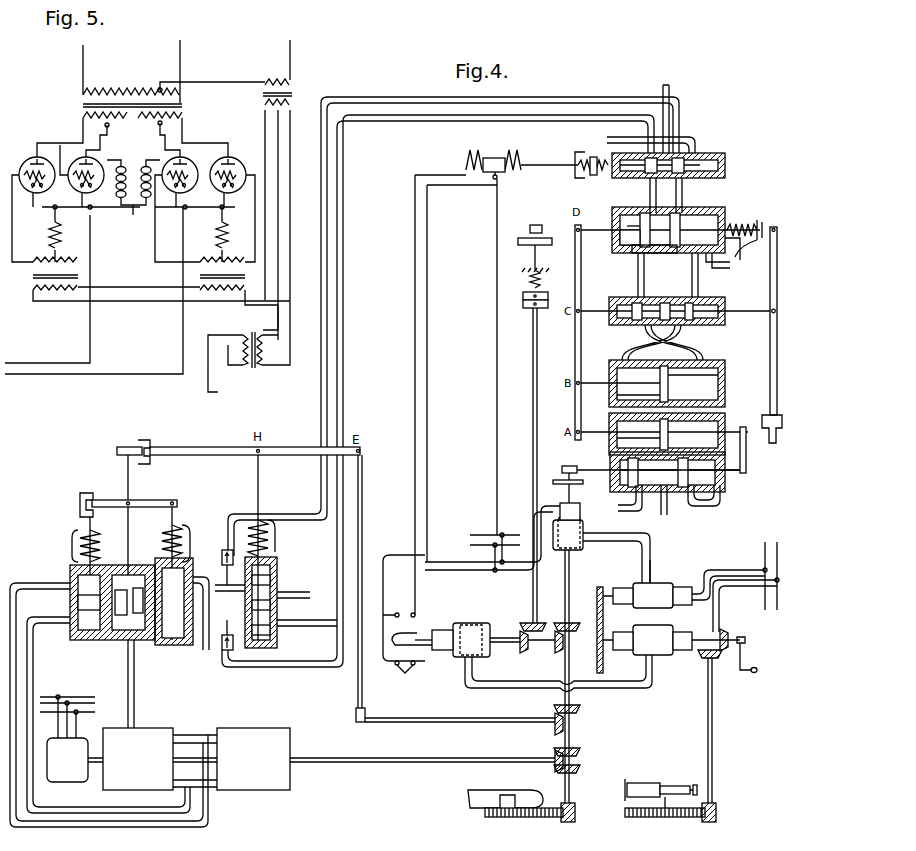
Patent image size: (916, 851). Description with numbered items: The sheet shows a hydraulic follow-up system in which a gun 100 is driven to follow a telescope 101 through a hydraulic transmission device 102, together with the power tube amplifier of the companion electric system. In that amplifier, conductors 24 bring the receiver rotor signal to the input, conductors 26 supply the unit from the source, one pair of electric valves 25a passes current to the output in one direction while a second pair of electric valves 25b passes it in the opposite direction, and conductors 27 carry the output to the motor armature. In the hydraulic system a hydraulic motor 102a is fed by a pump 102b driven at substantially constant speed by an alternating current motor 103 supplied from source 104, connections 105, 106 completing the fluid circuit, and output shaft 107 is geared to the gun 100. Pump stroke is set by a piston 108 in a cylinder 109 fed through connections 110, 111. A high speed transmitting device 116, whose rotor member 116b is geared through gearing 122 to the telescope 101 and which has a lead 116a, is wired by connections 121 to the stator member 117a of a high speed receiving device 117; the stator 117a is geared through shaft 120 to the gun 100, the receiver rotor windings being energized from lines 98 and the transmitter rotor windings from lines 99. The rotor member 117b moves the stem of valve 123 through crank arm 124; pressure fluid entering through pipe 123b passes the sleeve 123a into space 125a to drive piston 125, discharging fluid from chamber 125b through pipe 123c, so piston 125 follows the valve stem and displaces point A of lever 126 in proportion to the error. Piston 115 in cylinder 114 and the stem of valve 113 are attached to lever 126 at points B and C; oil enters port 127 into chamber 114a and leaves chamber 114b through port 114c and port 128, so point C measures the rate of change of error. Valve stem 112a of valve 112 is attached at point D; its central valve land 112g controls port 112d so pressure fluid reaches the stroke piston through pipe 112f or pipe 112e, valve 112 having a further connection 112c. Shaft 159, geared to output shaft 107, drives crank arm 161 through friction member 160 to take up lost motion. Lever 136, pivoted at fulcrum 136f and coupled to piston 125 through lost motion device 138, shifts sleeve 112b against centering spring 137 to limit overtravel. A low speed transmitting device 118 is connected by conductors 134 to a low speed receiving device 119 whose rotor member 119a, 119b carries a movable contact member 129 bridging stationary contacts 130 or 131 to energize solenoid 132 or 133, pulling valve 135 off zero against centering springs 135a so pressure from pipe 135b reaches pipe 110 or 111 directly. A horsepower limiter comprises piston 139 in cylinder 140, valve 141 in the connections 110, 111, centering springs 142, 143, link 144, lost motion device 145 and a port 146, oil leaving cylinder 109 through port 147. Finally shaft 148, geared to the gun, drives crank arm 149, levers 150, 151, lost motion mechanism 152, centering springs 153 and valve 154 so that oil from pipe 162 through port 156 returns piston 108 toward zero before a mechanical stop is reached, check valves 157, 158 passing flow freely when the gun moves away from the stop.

In FIG. 5, the conductors 24 is at (215, 392).
In FIG. 5, the electric valves 25a is at (78, 157).
In FIG. 5, the electric valves 25b is at (225, 157).
In FIG. 5, the conductors 26 is at (180, 60).
In FIG. 5, the conductors 27 is at (43, 374).
In FIG. 4, the lines 98 is at (510, 545).
In FIG. 4, the lines 99 is at (763, 550).
In FIG. 4, the gun 100 is at (475, 798).
In FIG. 4, the telescope 101 is at (655, 768).
In FIG. 4, the hydraulic transmission device 102 is at (195, 732).
In FIG. 4, the hydraulic motor 102a is at (253, 759).
In FIG. 4, the pump 102b is at (138, 759).
In FIG. 4, the alternating current motor 103 is at (75, 760).
In FIG. 4, the source 104 is at (95, 697).
In FIG. 4, the connection 105 is at (188, 739).
In FIG. 4, the connection 106 is at (188, 787).
In FIG. 4, the output shaft 107 is at (360, 764).
In FIG. 4, the piston 108 is at (140, 588).
In FIG. 4, the cylinder 109 is at (120, 590).
In FIG. 4, the connection 110 is at (321, 272).
In FIG. 4, the connection 111 is at (338, 272).
In FIG. 4, the valve 112 is at (722, 207).
In FIG. 4, the valve stem 112a is at (622, 235).
In FIG. 4, the sleeve 112b is at (735, 222).
In FIG. 4, the port 112c is at (731, 276).
In FIG. 4, the port 112d is at (663, 250).
In FIG. 4, the pipe 112e is at (680, 200).
In FIG. 4, the pipe 112f is at (645, 200).
In FIG. 4, the central valve land 112g is at (650, 232).
In FIG. 4, the valve 113 is at (704, 325).
In FIG. 4, the cylinder 114 is at (726, 375).
In FIG. 4, the chamber 114a is at (710, 388).
In FIG. 4, the chamber 114b is at (625, 401).
In FIG. 4, the port 114c is at (645, 348).
In FIG. 4, the piston 115 is at (664, 368).
In FIG. 4, the high speed transmitting device 116 is at (662, 595).
In FIG. 4, the lead 116a is at (668, 583).
In FIG. 4, the rotor member 116b is at (622, 590).
In FIG. 4, the high speed receiving device 117 is at (568, 534).
In FIG. 4, the stator member 117a is at (585, 550).
In FIG. 4, the rotor member 117b is at (560, 510).
In FIG. 4, the low speed transmitting device 118 is at (685, 714).
In FIG. 4, the low speed receiving device 119 is at (471, 640).
In FIG. 4, the rotor member 119a is at (483, 657).
In FIG. 4, the rotor member 119b is at (441, 652).
In FIG. 4, the shaft 120 is at (525, 613).
In FIG. 4, the connections 121 is at (652, 553).
In FIG. 4, the gearing 122 is at (604, 605).
In FIG. 4, the valve 123 is at (726, 490).
In FIG. 4, the sleeve 123a is at (710, 502).
In FIG. 4, the pipe 123b is at (666, 523).
In FIG. 4, the pipe 123c is at (616, 511).
In FIG. 4, the crank arm 124 is at (565, 478).
In FIG. 4, the piston 125 is at (660, 436).
In FIG. 4, the space 125a is at (625, 430).
In FIG. 4, the chamber 125b is at (738, 432).
In FIG. 4, the lever 126 is at (578, 405).
In FIG. 4, the port 127 is at (638, 290).
In FIG. 4, the port 128 is at (700, 293).
In FIG. 4, the movable contact member 129 is at (433, 628).
In FIG. 4, the stationary contacts 130 is at (405, 670).
In FIG. 4, the stationary contacts 131 is at (404, 614).
In FIG. 4, the solenoid 132 is at (515, 160).
In FIG. 4, the solenoid 133 is at (478, 160).
In FIG. 4, the conductors 134 is at (528, 690).
In FIG. 4, the valve 135 is at (726, 162).
In FIG. 4, the centering springs 135a is at (605, 140).
In FIG. 4, the pipe 135b is at (672, 92).
In FIG. 4, the lever 136 is at (770, 352).
In FIG. 4, the fulcrum 136f is at (770, 313).
In FIG. 4, the centering spring 137 is at (745, 258).
In FIG. 4, the lost motion device 138 is at (776, 443).
In FIG. 4, the piston 139 is at (78, 603).
In FIG. 4, the cylinder 140 is at (78, 630).
In FIG. 4, the valve 141 is at (170, 648).
In FIG. 4, the centering spring 142 is at (78, 541).
In FIG. 4, the centering spring 143 is at (185, 538).
In FIG. 4, the link 144 is at (152, 500).
In FIG. 4, the lost motion device 145 is at (90, 493).
In FIG. 4, the conduit 146 is at (216, 595).
In FIG. 4, the port 147 is at (208, 657).
In FIG. 4, the shaft 148 is at (462, 724).
In FIG. 4, the crank arm 149 is at (368, 714).
In FIG. 4, the lever 150 is at (362, 512).
In FIG. 4, the lever 151 is at (203, 447).
In FIG. 4, the lost motion mechanism 152 is at (130, 447).
In FIG. 4, the centering springs 153 is at (268, 535).
In FIG. 4, the valve 154 is at (278, 572).
In FIG. 4, the port 156 is at (245, 572).
In FIG. 4, the check valve 157 is at (248, 560).
In FIG. 4, the check valve 158 is at (238, 655).
In FIG. 4, the shaft 159 is at (533, 449).
In FIG. 4, the friction member 160 is at (527, 304).
In FIG. 4, the crank arm 161 is at (537, 245).
In FIG. 4, the pipe 162 is at (332, 604).